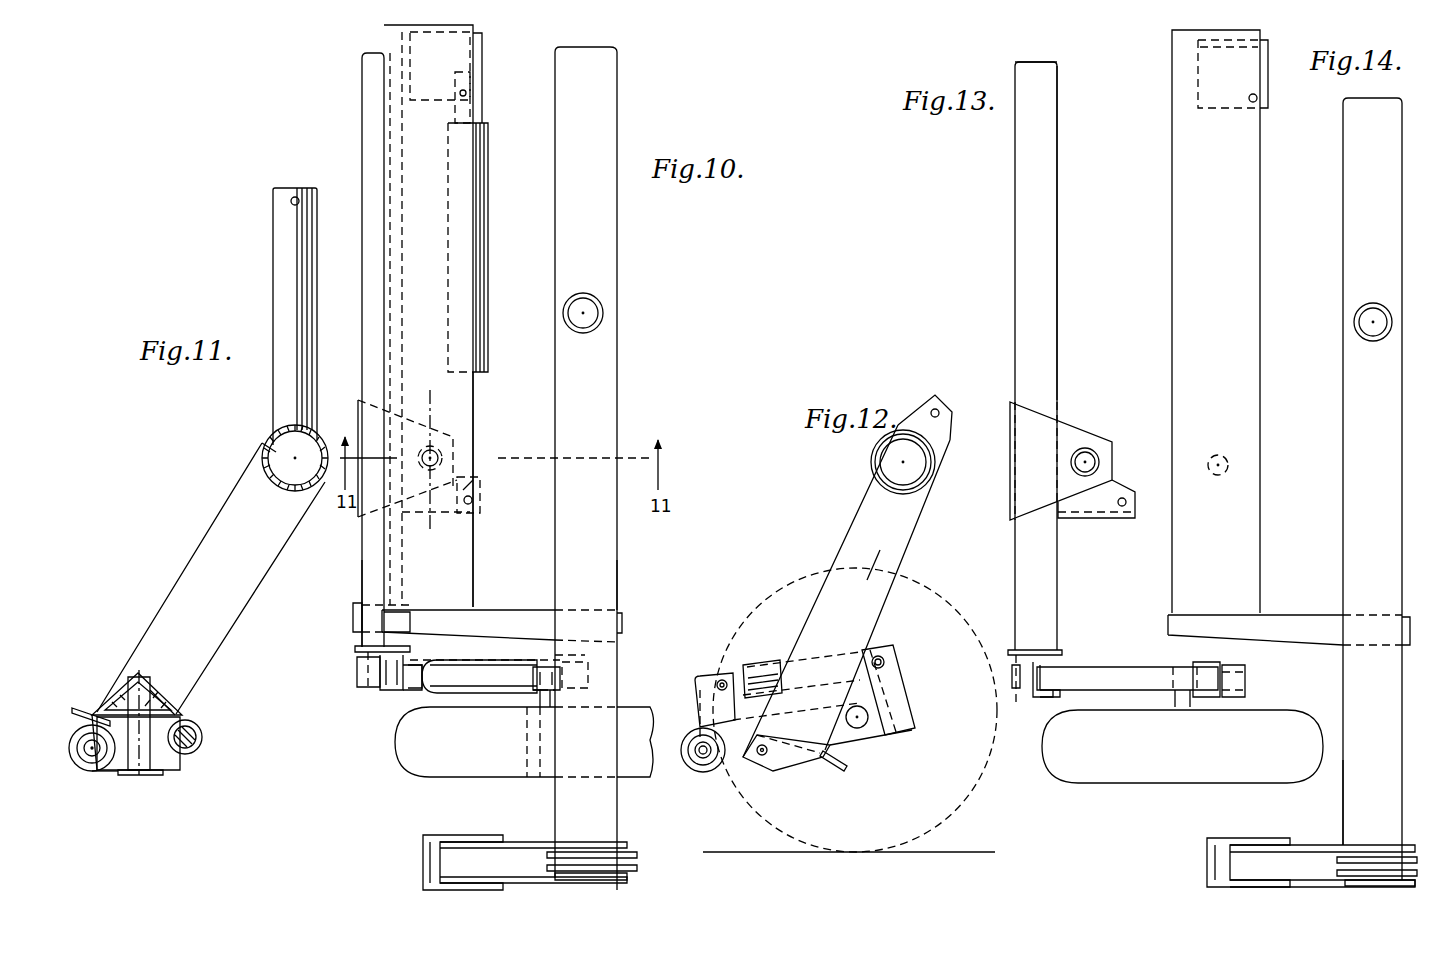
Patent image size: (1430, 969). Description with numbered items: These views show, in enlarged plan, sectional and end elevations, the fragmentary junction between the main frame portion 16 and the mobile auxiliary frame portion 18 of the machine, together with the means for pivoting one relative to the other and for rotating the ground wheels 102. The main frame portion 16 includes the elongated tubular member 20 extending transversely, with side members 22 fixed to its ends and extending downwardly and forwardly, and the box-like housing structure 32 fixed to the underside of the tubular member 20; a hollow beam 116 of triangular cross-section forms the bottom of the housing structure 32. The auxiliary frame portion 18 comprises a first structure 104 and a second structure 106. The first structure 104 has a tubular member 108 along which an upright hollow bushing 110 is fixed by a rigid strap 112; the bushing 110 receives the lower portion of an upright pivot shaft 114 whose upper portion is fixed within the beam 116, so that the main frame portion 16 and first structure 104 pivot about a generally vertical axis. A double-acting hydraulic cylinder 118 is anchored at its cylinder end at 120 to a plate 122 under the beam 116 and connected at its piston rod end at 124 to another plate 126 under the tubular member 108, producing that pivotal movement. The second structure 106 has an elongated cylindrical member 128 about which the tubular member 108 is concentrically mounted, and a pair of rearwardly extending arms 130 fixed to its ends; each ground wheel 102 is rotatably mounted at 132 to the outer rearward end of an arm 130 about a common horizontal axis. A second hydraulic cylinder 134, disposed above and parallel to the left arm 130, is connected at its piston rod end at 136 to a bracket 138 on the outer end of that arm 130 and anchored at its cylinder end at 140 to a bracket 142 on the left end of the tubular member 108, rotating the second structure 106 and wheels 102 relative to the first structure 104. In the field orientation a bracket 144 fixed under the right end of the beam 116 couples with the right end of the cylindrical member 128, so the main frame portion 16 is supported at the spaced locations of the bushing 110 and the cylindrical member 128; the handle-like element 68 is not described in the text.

In FIG. 10, the main frame portion 16 is at (620, 392).
In FIG. 11, the main frame portion 16 is at (265, 418).
In FIG. 12, the main frame portion 16 is at (832, 532).
In FIG. 14, the main frame portion 16 is at (1405, 520).
In FIG. 10, the mobile auxiliary frame portion 18 is at (358, 562).
In FIG. 11, the mobile auxiliary frame portion 18 is at (70, 728).
In FIG. 12, the mobile auxiliary frame portion 18 is at (885, 745).
In FIG. 13, the mobile auxiliary frame portion 18 is at (1060, 313).
In FIG. 10, the tubular member 20 is at (617, 582).
In FIG. 11, the tubular member 20 is at (268, 475).
In FIG. 12, the tubular member 20 is at (875, 475).
In FIG. 14, the tubular member 20 is at (1343, 783).
In FIG. 10, the side members 22 is at (523, 885).
In FIG. 12, the side members 22 is at (908, 565).
In FIG. 14, the side members 22 is at (1300, 888).
In FIG. 10, the box-like housing structure 32 is at (495, 605).
In FIG. 11, the box-like housing structure 32 is at (168, 578).
In FIG. 14, the box-like housing structure 32 is at (1282, 607).
In FIG. 10, the handle tube 68 is at (600, 300).
In FIG. 11, the handle tube 68 is at (273, 250).
In FIG. 14, the handle tube 68 is at (1355, 305).
In FIG. 10, the ground wheels 102 is at (440, 779).
In FIG. 12, the ground wheels 102 is at (984, 802).
In FIG. 13, the ground wheels 102 is at (1180, 787).
In FIG. 10, the first structure 104 is at (356, 270).
In FIG. 13, the first structure 104 is at (1012, 297).
In FIG. 10, the second structure 106 is at (418, 662).
In FIG. 13, the second structure 106 is at (1085, 663).
In FIG. 10, the tubular member 108 is at (362, 175).
In FIG. 11, the tubular member 108 is at (130, 778).
In FIG. 13, the tubular member 108 is at (1015, 190).
In FIG. 10, the upright hollow bushing 110 is at (430, 444).
In FIG. 11, the upright hollow bushing 110 is at (165, 757).
In FIG. 13, the upright hollow bushing 110 is at (1087, 449).
In FIG. 10, the rigid strap 112 is at (358, 500).
In FIG. 11, the rigid strap 112 is at (75, 752).
In FIG. 13, the rigid strap 112 is at (1010, 475).
In FIG. 10, the upright pivot shaft 114 is at (432, 478).
In FIG. 11, the upright pivot shaft 114 is at (160, 690).
In FIG. 14, the upright pivot shaft 114 is at (1230, 460).
In FIG. 10, the hollow beam 116 is at (473, 550).
In FIG. 11, the hollow beam 116 is at (135, 672).
In FIG. 14, the hollow beam 116 is at (1262, 330).
In FIG. 10, the hydraulic cylinder 118 is at (488, 212).
In FIG. 11, the hydraulic cylinder 118 is at (203, 735).
In FIG. 10, the cylinder end anchor 120 is at (478, 92).
In FIG. 10, the plate 122 is at (482, 55).
In FIG. 11, the plate 122 is at (168, 752).
In FIG. 14, the plate 122 is at (1265, 72).
In FIG. 10, the piston rod end connection 124 is at (480, 505).
In FIG. 10, the plate 126 is at (478, 488).
In FIG. 13, the plate 126 is at (1080, 522).
In FIG. 10, the cylindrical member 128 is at (357, 668).
In FIG. 11, the cylindrical member 128 is at (90, 770).
In FIG. 12, the cylindrical member 128 is at (705, 760).
In FIG. 13, the cylindrical member 128 is at (1016, 690).
In FIG. 10, the arms 130 is at (595, 680).
In FIG. 12, the arms 130 is at (845, 768).
In FIG. 13, the arms 130 is at (1130, 667).
In FIG. 10, the wheel mounting 132 is at (535, 672).
In FIG. 12, the wheel mounting 132 is at (860, 728).
In FIG. 13, the wheel mounting 132 is at (1175, 700).
In FIG. 10, the hydraulic cylinder 134 is at (450, 695).
In FIG. 12, the hydraulic cylinder 134 is at (762, 663).
In FIG. 10, the piston rod end connection 136 is at (595, 655).
In FIG. 12, the piston rod end connection 136 is at (883, 656).
In FIG. 10, the bracket 138 is at (562, 690).
In FIG. 12, the bracket 138 is at (918, 680).
In FIG. 13, the bracket 138 is at (1247, 680).
In FIG. 10, the cylinder end anchor 140 is at (393, 695).
In FIG. 12, the cylinder end anchor 140 is at (720, 682).
In FIG. 10, the bracket 142 is at (380, 688).
In FIG. 12, the bracket 142 is at (697, 690).
In FIG. 13, the bracket 142 is at (1040, 700).
In FIG. 11, the bracket 144 is at (80, 712).